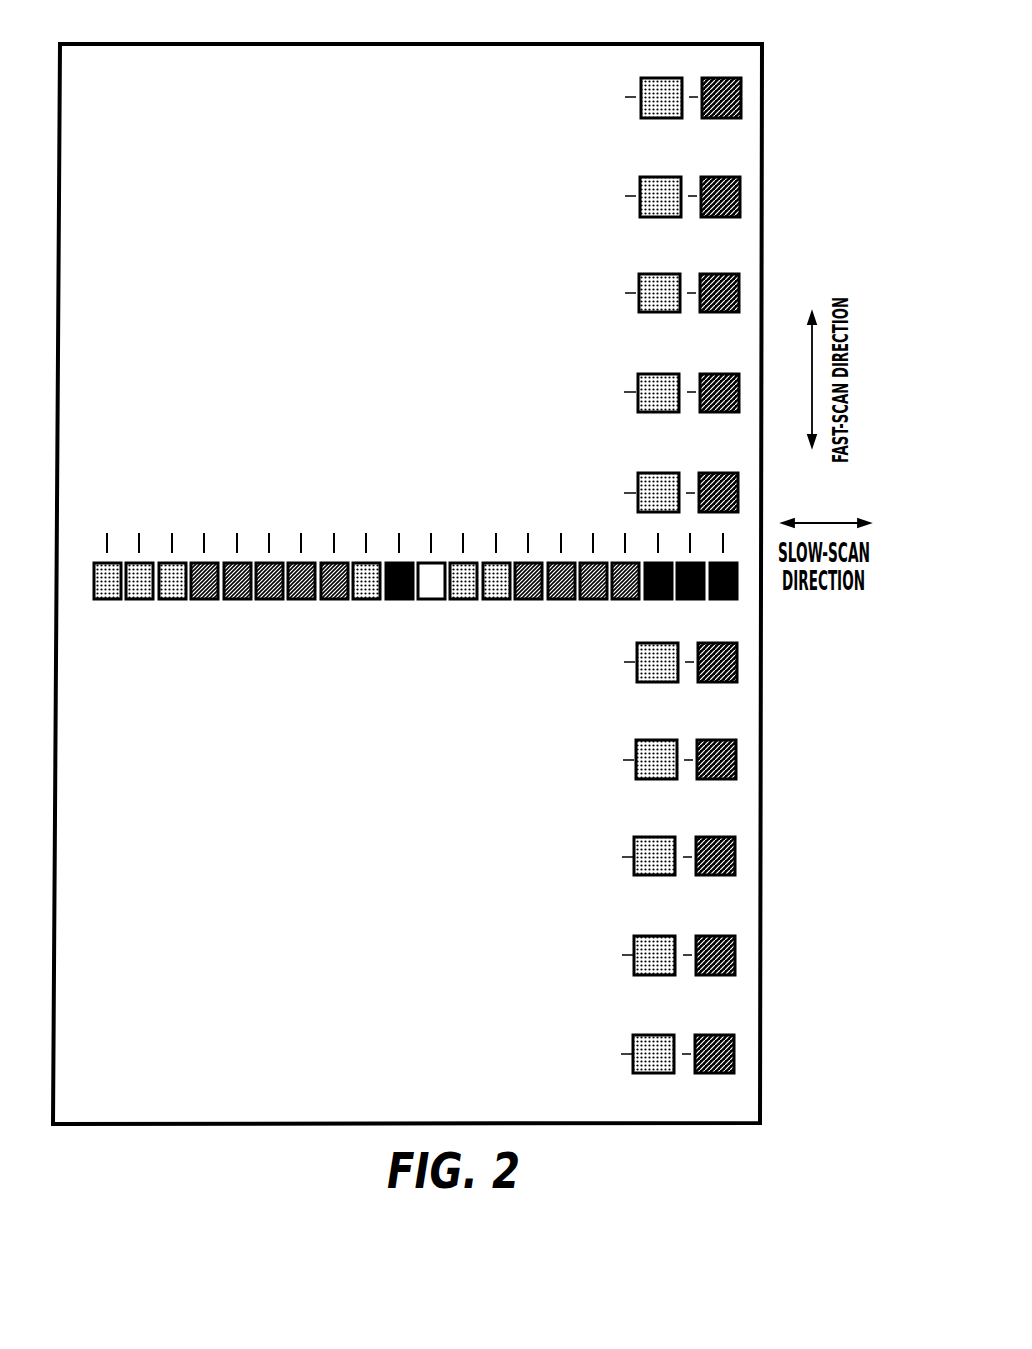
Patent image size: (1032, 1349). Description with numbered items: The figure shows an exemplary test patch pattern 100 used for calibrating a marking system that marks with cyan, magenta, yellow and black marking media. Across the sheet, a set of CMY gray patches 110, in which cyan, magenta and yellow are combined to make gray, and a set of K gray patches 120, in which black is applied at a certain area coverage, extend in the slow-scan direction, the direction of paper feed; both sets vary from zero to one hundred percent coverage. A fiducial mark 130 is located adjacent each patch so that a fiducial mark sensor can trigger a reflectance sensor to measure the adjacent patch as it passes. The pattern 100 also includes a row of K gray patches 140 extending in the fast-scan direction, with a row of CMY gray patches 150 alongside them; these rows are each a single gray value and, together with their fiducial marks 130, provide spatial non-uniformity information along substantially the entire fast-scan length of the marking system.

The test patch pattern 100 is at (540, 43).
The CMY gray patches 110 is at (412, 606).
The K gray patches 120 is at (748, 606).
The fiducial mark 130 is at (500, 518).
The row of K gray patches 140 is at (645, 177).
The row of CMY gray patches 150 is at (741, 177).